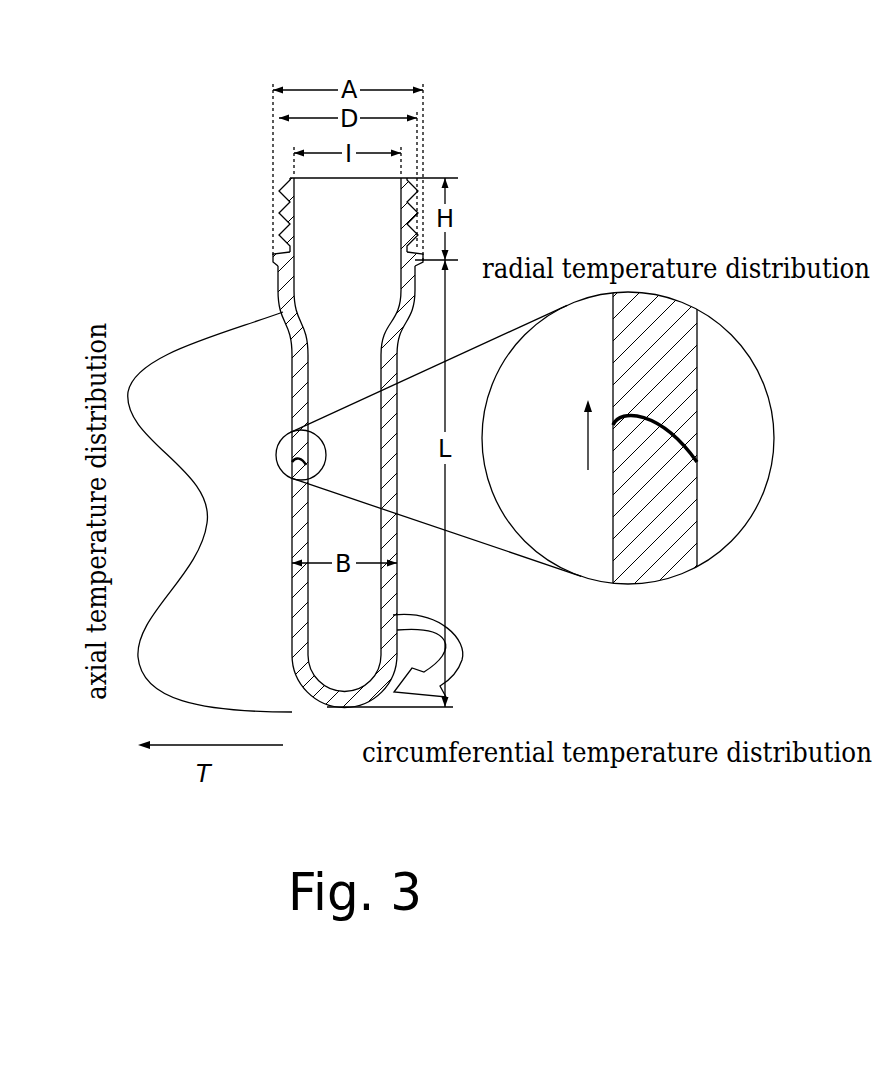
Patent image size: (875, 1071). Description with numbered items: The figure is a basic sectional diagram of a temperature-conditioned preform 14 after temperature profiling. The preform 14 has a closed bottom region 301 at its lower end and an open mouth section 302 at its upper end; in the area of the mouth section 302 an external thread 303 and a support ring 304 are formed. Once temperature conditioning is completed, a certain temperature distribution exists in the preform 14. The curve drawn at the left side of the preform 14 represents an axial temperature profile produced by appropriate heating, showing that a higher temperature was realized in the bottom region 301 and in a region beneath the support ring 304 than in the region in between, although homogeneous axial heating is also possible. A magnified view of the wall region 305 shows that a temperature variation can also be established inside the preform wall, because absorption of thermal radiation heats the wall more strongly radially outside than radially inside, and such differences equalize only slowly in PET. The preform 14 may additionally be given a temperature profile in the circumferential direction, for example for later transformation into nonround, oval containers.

The preform 14 is at (530, 140).
The closed bottom region 301 is at (328, 707).
The open mouth section 302 is at (170, 213).
The external thread 303 is at (279, 191).
The support ring 304 is at (274, 260).
The wall region 305 is at (278, 441).